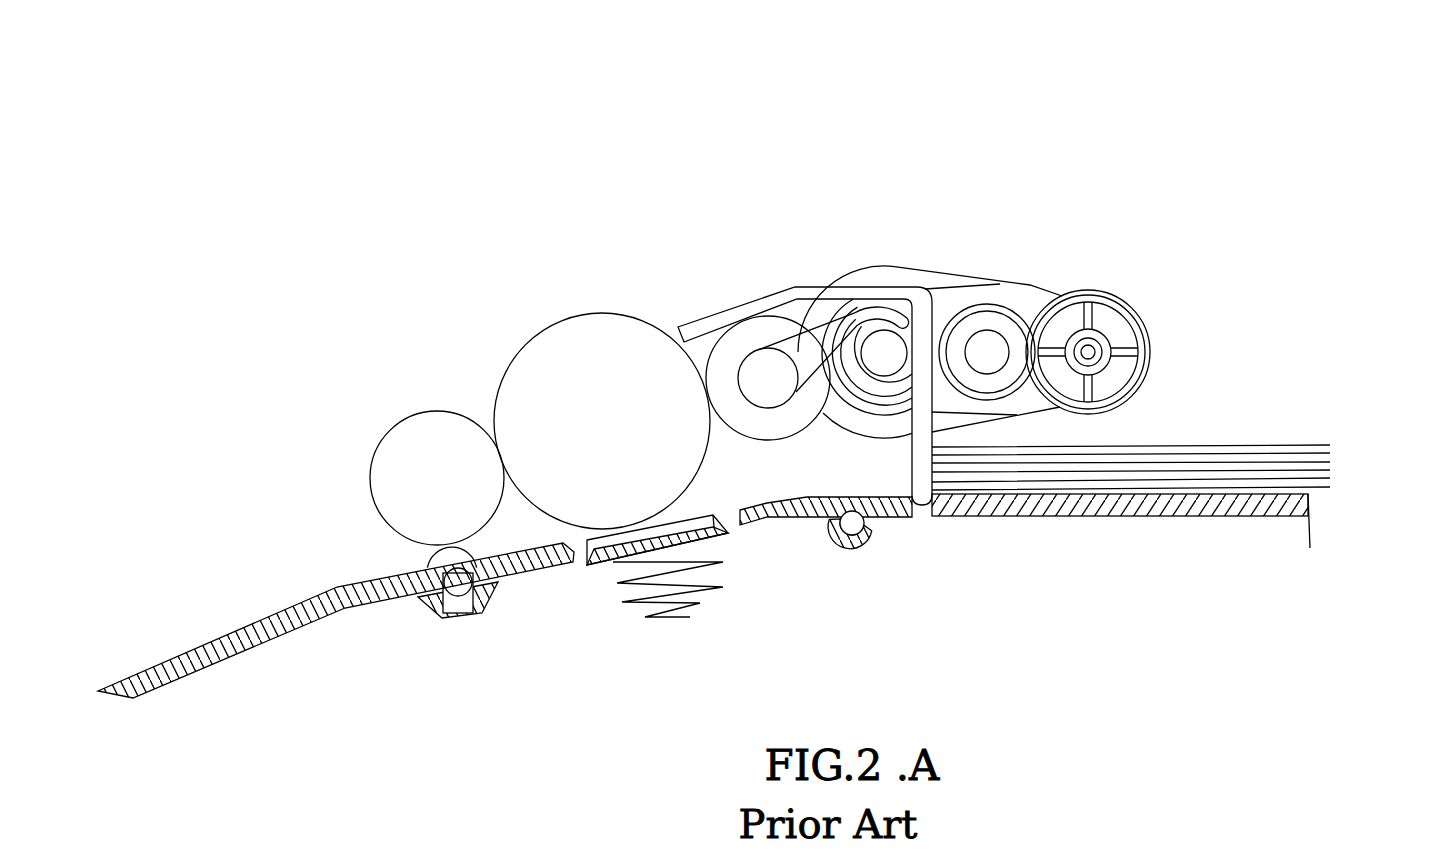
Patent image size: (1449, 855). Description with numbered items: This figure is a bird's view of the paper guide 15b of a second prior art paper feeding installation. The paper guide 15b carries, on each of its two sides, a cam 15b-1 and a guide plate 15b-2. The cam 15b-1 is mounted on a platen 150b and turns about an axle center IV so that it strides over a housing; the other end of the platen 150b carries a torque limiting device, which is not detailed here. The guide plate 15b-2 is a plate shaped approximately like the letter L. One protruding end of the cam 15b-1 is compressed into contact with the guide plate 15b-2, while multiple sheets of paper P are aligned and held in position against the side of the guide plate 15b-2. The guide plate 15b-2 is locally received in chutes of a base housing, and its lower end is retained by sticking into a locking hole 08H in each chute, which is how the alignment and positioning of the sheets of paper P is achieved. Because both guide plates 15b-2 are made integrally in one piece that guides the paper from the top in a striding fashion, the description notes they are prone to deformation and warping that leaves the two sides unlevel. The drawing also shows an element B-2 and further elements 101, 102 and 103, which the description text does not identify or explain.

The paper guide 15b is at (667, 150).
The cam 15b-1 is at (758, 324).
The guide plate 15b-2 is at (830, 287).
The platen 150b is at (715, 352).
The spiral roller 103 is at (938, 330).
The roller 102 is at (1020, 302).
The spoked roller 101 is at (1146, 322).
The guide plate B-2 is at (284, 603).
The paper P is at (1338, 465).
The axle center IV is at (770, 388).
The vertical guide bar 08H is at (927, 508).